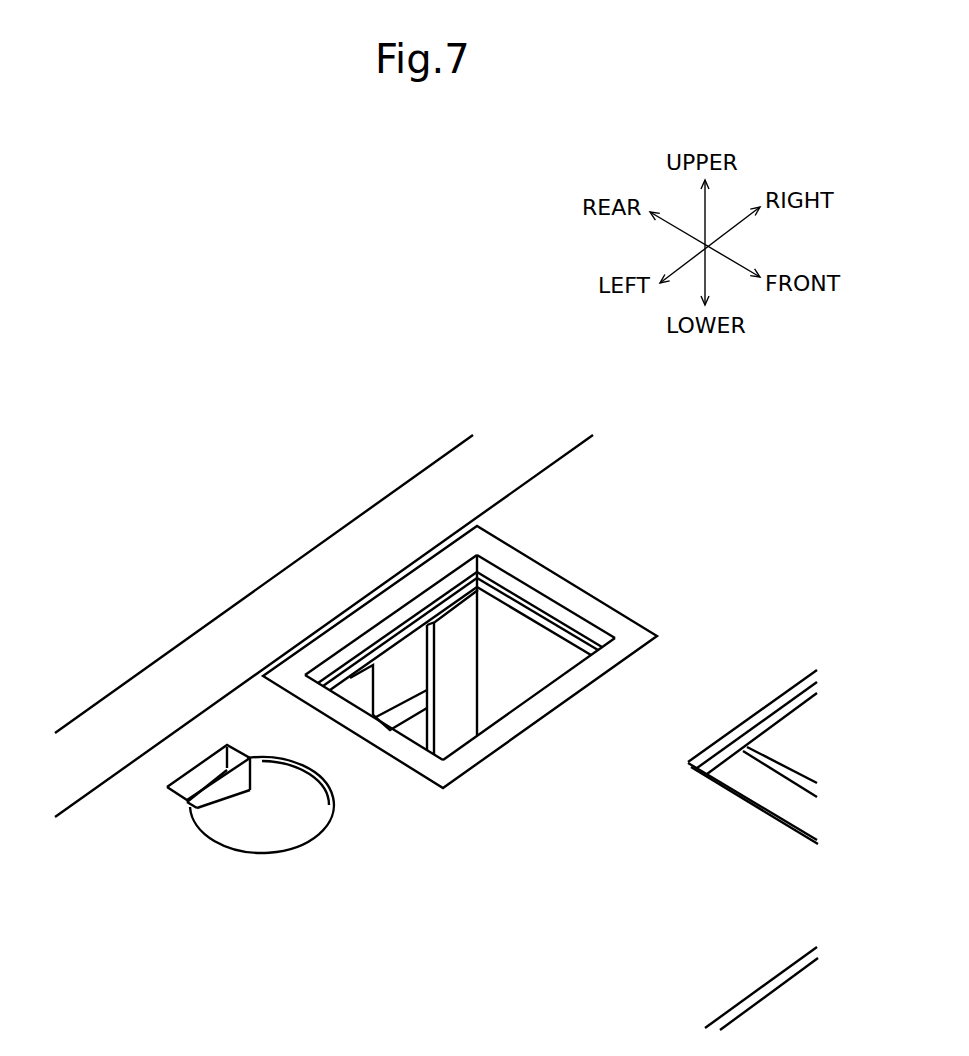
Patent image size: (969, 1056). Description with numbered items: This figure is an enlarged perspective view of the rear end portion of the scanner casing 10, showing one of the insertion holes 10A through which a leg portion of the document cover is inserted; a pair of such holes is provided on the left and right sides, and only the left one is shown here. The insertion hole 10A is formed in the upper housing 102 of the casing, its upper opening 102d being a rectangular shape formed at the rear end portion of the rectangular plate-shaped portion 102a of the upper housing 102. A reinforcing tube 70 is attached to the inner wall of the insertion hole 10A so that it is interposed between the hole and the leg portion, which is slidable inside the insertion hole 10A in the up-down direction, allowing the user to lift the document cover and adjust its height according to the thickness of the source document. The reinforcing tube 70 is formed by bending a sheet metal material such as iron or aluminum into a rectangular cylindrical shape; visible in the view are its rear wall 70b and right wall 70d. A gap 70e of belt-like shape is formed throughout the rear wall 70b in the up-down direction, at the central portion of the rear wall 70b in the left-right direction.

The scanner casing 10 is at (417, 472).
The insertion hole 10A is at (353, 660).
The reinforcing tube 70 is at (453, 655).
The rear wall 70b is at (350, 668).
The right wall 70d is at (523, 642).
The gap 70e is at (367, 617).
The upper housing 102 is at (158, 655).
The rectangular plate-shaped portion 102a is at (115, 845).
The upper opening 102d is at (557, 600).